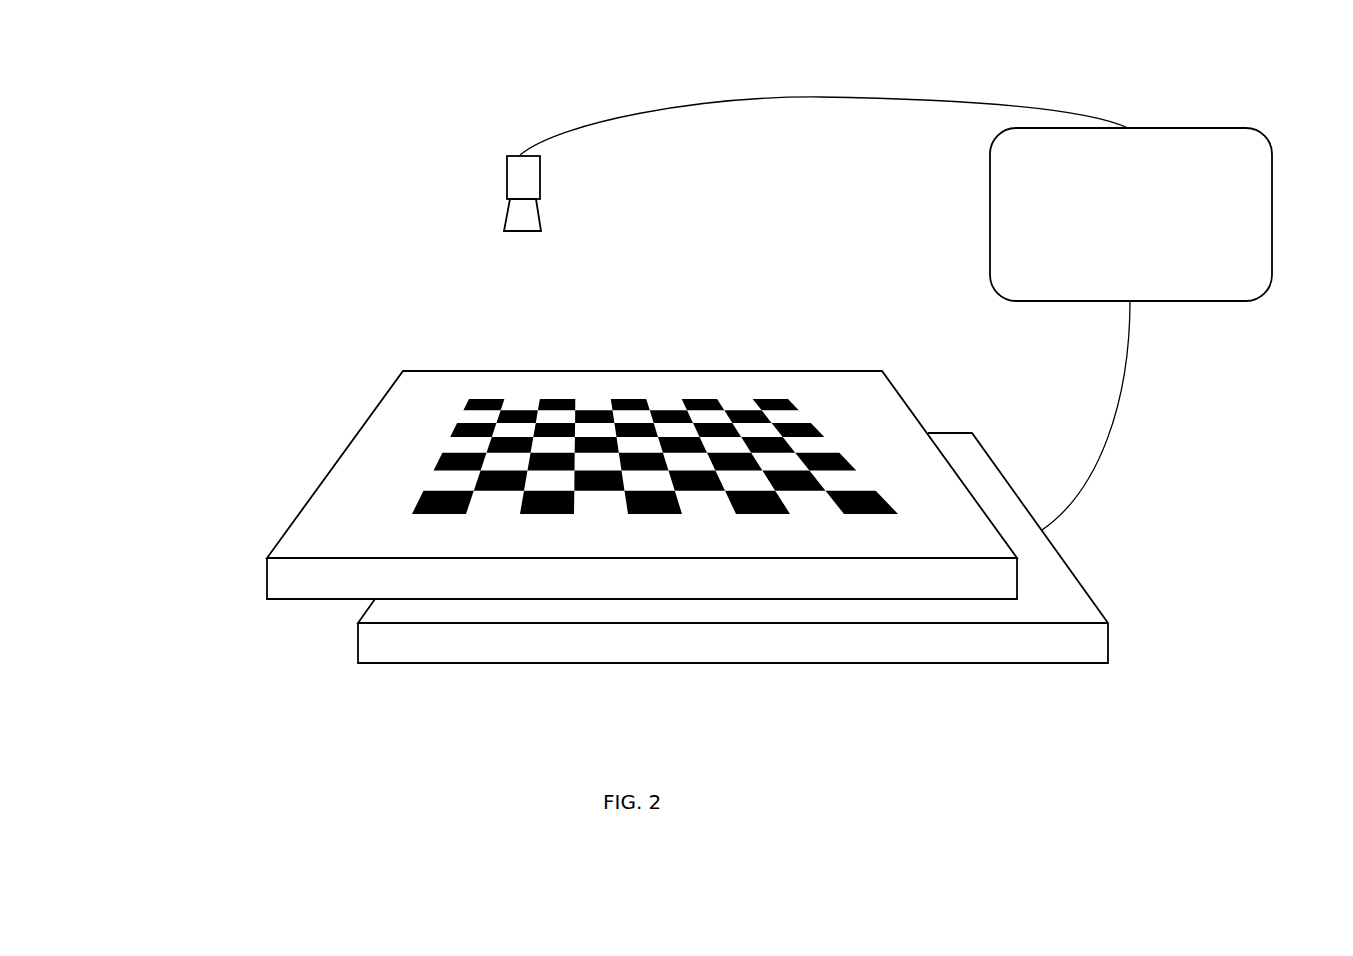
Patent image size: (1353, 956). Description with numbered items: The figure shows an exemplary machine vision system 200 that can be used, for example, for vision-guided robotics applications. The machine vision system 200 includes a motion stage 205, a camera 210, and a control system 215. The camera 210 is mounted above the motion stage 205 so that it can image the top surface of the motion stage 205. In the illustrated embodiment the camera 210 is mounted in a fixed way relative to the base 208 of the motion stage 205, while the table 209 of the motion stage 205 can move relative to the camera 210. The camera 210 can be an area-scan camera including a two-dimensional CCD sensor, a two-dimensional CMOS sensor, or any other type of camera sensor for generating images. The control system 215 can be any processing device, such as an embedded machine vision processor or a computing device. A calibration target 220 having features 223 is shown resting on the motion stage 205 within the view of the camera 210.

The machine vision system 200 is at (330, 93).
The motion stage 205 is at (579, 485).
The base 208 is at (358, 643).
The table 209 is at (335, 464).
The camera 210 is at (551, 177).
The control system 215 is at (1131, 329).
The calibration target 220 is at (610, 462).
The features 223 is at (483, 449).